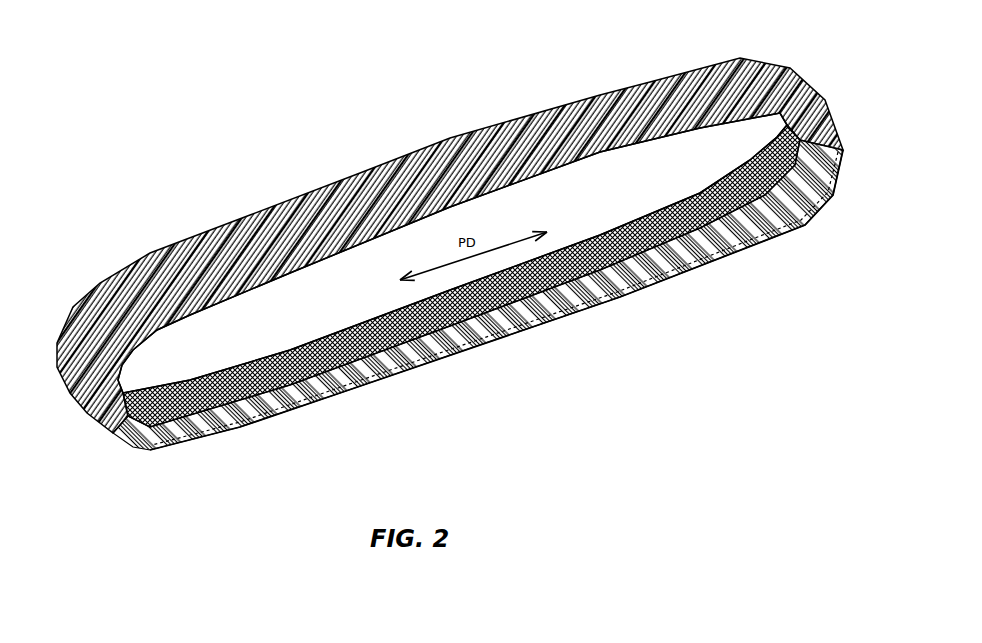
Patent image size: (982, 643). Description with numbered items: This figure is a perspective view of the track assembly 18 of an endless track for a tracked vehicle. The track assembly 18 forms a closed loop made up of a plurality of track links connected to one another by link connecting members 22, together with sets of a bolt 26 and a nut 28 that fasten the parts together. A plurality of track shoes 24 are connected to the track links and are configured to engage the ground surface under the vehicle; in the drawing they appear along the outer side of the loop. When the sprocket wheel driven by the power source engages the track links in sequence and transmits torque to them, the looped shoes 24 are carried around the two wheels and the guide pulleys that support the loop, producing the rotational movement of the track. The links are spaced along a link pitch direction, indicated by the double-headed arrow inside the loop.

The track assembly 18 is at (450, 247).
The link connecting members 22 is at (337, 367).
The track shoes 24 is at (507, 325).
The bolt 26 is at (317, 233).
The nut 28 is at (580, 283).